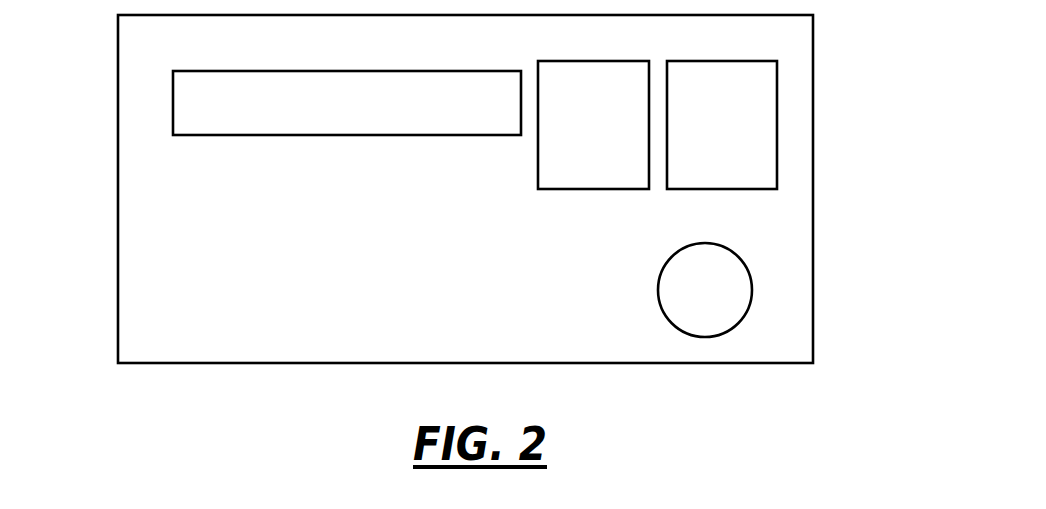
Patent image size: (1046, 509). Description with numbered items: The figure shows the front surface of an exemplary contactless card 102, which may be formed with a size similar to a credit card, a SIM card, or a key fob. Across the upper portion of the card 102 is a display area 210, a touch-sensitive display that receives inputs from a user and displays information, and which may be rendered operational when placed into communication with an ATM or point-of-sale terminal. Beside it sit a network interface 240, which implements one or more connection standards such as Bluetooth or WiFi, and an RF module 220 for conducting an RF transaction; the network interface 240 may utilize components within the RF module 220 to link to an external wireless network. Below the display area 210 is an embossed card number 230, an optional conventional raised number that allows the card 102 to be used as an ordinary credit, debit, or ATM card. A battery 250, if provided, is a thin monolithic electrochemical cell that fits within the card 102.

The card 102 is at (817, 178).
The display area 210 is at (347, 103).
The RF module 220 is at (722, 125).
The embossed card number 230 is at (229, 210).
The network interface 240 is at (593, 125).
The battery 250 is at (705, 290).